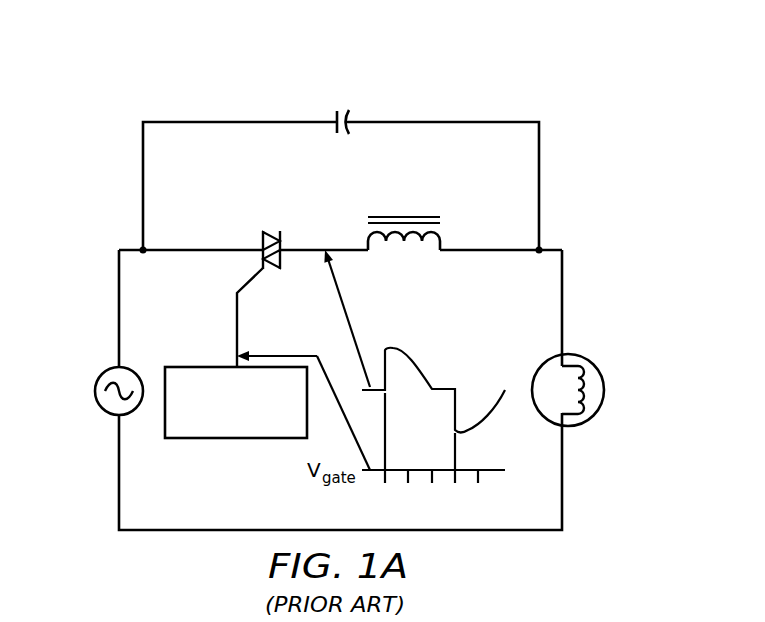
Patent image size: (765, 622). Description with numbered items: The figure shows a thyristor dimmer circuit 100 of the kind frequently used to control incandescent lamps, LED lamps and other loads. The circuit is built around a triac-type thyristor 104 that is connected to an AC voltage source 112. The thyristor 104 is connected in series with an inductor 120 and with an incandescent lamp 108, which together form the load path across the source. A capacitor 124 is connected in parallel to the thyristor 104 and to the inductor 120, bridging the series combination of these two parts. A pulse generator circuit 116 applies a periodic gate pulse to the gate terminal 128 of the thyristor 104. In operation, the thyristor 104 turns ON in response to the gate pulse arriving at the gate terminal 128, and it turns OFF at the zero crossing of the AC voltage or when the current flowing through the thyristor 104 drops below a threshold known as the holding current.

The thyristor dimmer circuit 100 is at (444, 71).
The thyristor 104 is at (269, 231).
The incandescent lamp 108 is at (604, 390).
The AC voltage source 112 is at (95, 388).
The pulse generator circuit 116 is at (222, 439).
The inductor 120 is at (440, 244).
The capacitor 124 is at (334, 117).
The gate terminal 128 is at (236, 338).